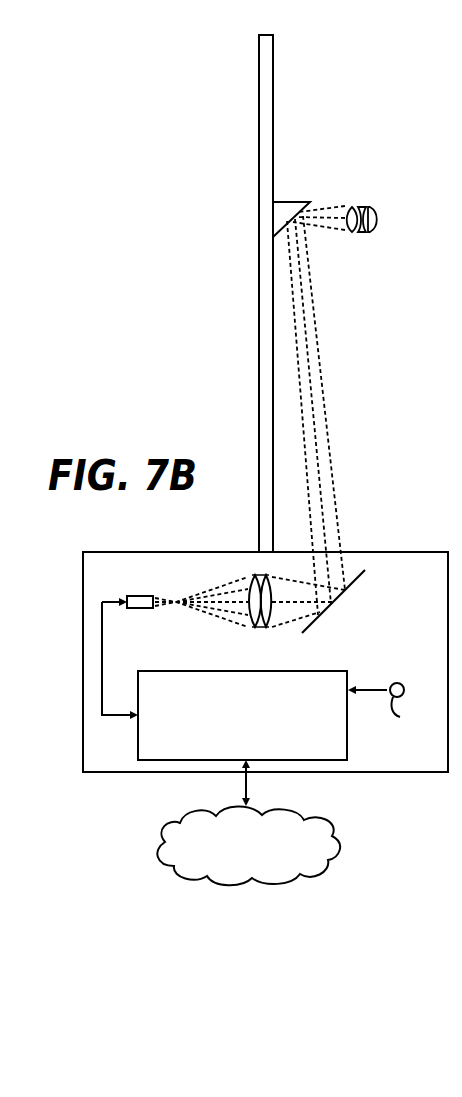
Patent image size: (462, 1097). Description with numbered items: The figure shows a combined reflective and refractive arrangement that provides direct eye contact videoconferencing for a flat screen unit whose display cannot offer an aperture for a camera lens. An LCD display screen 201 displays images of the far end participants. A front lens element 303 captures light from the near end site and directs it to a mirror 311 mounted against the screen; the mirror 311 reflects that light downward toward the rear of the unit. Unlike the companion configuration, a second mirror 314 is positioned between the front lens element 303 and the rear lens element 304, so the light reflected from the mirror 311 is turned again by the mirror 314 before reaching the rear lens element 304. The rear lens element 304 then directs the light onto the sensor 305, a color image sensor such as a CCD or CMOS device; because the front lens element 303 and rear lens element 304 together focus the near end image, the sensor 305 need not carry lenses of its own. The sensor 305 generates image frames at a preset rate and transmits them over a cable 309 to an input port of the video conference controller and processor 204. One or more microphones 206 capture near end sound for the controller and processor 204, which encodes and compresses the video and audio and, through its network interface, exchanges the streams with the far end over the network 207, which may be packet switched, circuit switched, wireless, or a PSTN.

The LCD display screen 201 is at (259, 52).
The mirror 311 is at (288, 201).
The front lens element 303 is at (383, 214).
The sensor 305 is at (131, 609).
The cable 309 is at (102, 633).
The rear lens element 304 is at (259, 638).
The mirror 314 is at (362, 576).
The controller and processor 204 is at (242, 715).
The microphone 206 is at (396, 703).
The network 207 is at (248, 822).